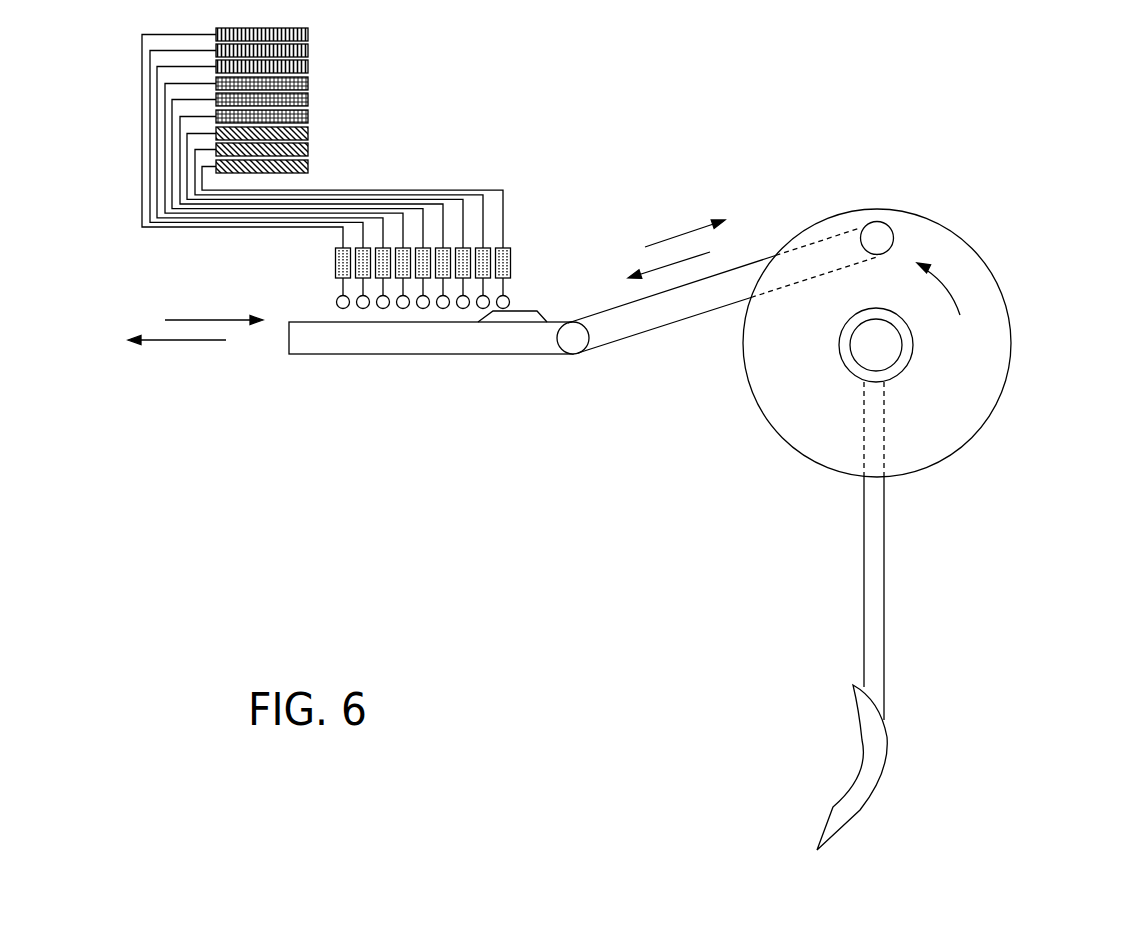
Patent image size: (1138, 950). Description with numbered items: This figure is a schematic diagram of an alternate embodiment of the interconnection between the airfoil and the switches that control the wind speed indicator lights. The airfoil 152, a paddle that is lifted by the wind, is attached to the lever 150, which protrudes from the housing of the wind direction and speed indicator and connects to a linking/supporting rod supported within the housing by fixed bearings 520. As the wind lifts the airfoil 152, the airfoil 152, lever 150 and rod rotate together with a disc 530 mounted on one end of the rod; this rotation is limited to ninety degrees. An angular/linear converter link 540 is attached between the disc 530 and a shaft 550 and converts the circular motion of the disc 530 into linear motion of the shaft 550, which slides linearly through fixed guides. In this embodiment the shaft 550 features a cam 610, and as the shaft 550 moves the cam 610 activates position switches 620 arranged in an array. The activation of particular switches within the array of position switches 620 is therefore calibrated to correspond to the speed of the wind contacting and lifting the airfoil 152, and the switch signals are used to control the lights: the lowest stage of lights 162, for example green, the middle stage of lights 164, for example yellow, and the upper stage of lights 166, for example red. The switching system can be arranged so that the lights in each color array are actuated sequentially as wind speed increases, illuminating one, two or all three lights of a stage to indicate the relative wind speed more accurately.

The upper stage of lights 166 is at (318, 64).
The middle stage of lights 164 is at (318, 114).
The lowest stage of lights 162 is at (318, 164).
The position switches 620 is at (322, 262).
The cam 610 is at (523, 292).
The shaft 550 is at (335, 366).
The angular/linear converter link 540 is at (667, 338).
The disc 530 is at (1020, 299).
The fixed bearings 520 is at (916, 384).
The lever 150 is at (896, 584).
The airfoil 152 is at (855, 833).